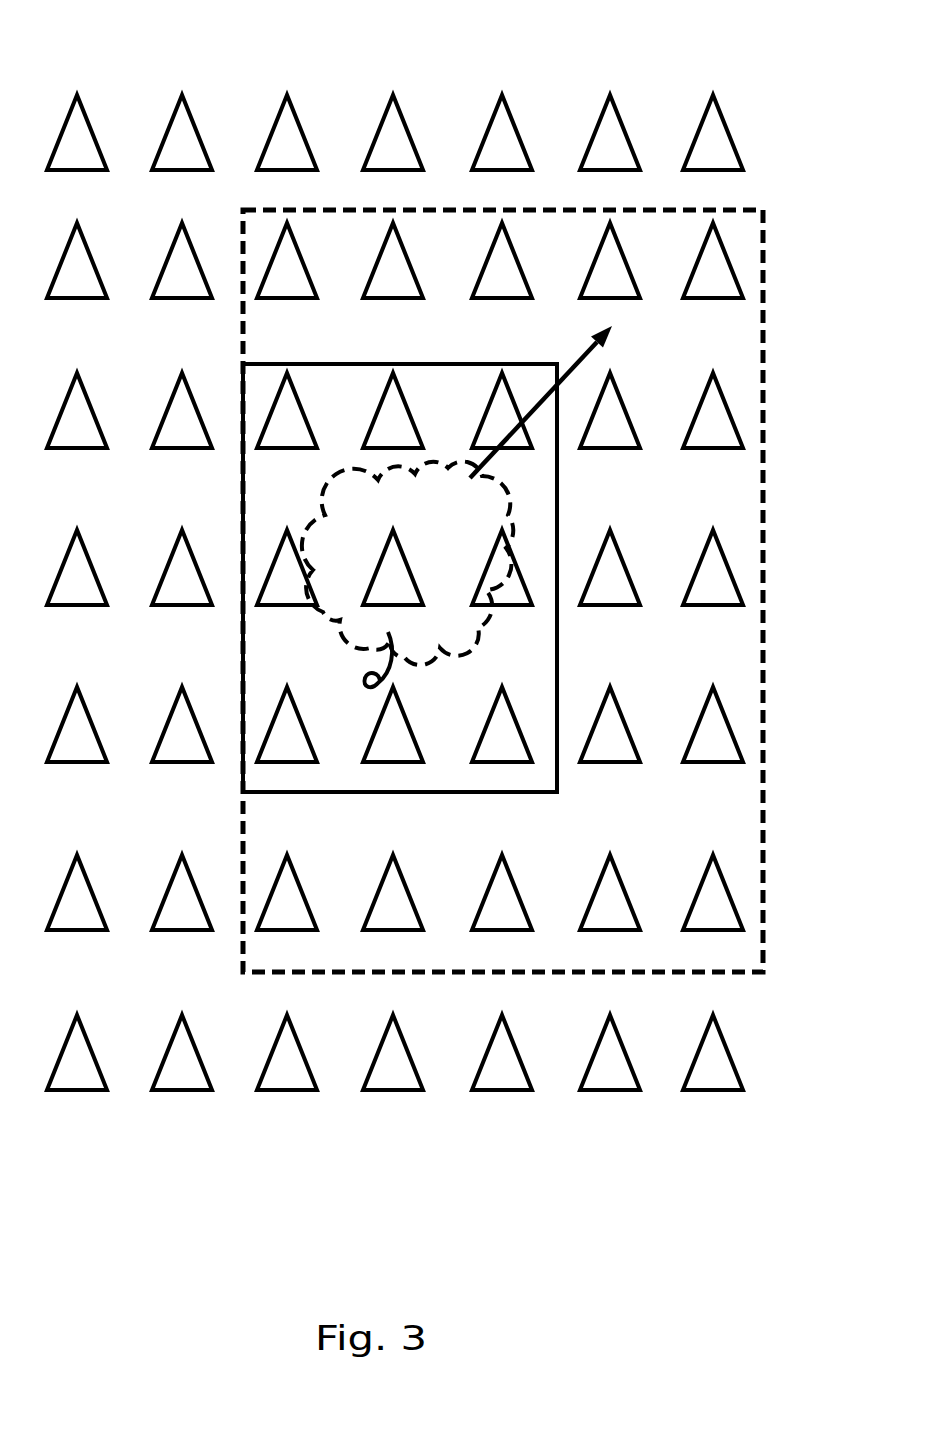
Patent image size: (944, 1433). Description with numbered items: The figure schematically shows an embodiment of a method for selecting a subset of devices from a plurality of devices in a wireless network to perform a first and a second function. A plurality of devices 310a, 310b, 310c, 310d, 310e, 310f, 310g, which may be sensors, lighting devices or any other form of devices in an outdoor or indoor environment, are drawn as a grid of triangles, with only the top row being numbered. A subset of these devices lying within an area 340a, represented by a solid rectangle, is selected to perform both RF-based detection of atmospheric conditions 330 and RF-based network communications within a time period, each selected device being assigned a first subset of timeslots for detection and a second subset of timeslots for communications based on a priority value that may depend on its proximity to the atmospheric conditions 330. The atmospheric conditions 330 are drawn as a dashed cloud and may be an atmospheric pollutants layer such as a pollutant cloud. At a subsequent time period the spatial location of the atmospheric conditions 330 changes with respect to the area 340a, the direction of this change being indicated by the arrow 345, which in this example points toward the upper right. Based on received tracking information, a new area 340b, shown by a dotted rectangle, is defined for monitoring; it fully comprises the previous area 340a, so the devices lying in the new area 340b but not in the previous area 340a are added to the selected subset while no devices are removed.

The device 310a is at (94, 90).
The device 310b is at (199, 90).
The device 310c is at (304, 90).
The device 310d is at (410, 90).
The device 310e is at (519, 90).
The device 310f is at (627, 90).
The device 310g is at (730, 90).
The atmospheric conditions 330 is at (328, 528).
The area 340a is at (418, 364).
The new area 340b is at (763, 210).
The arrow 345 is at (604, 340).